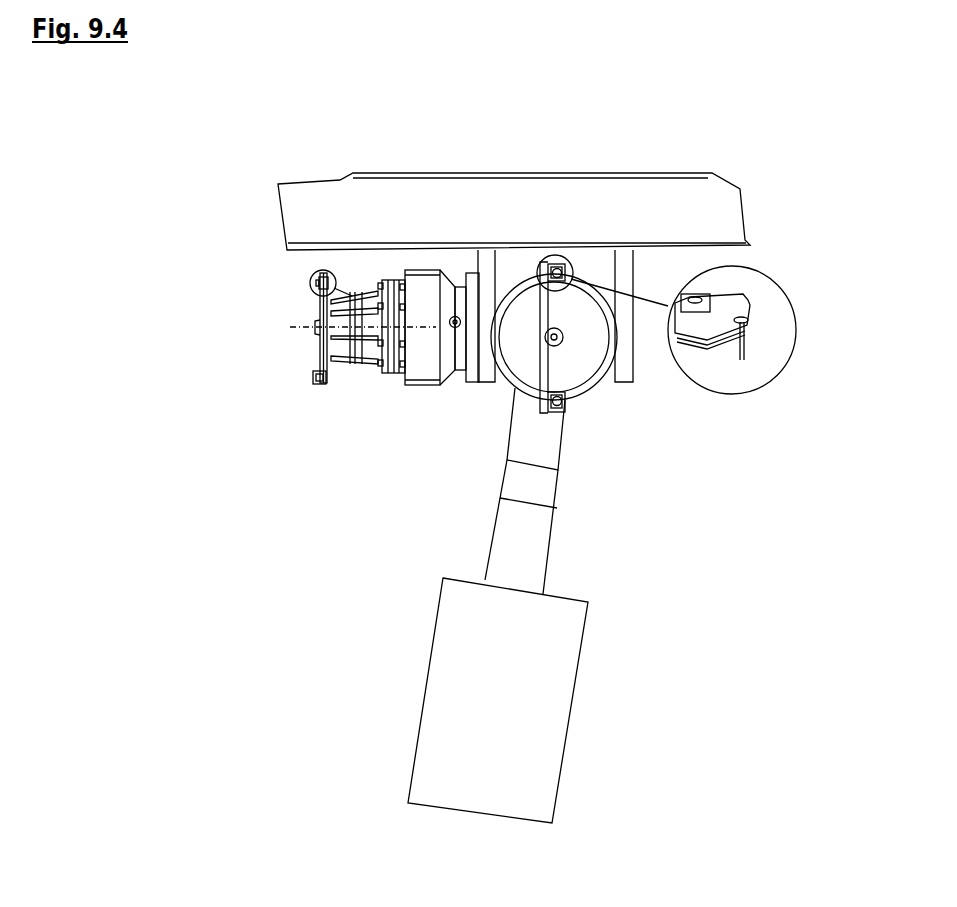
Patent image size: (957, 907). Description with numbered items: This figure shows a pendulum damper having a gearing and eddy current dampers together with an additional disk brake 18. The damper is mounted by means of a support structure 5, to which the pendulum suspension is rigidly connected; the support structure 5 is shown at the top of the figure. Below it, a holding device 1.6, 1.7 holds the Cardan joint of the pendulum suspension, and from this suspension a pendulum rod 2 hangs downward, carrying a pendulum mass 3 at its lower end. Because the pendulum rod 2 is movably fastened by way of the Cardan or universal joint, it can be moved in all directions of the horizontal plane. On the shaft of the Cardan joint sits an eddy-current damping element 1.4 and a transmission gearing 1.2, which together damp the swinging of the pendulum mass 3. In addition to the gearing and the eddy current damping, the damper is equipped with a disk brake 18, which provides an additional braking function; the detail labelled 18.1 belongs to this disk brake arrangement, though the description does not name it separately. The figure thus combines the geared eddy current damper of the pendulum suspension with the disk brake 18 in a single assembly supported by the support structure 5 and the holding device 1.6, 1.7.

The support structure 5 is at (655, 215).
The holding device 1.6 is at (483, 322).
The transmission gearing 1.2 is at (420, 373).
The disk brake 18 is at (588, 249).
The bearing holder 18.1 is at (356, 360).
The eddy-current damping element 1.4 is at (548, 314).
The holding device 1.7 is at (548, 448).
The pendulum rod 2 is at (535, 572).
The pendulum mass 3 is at (520, 705).